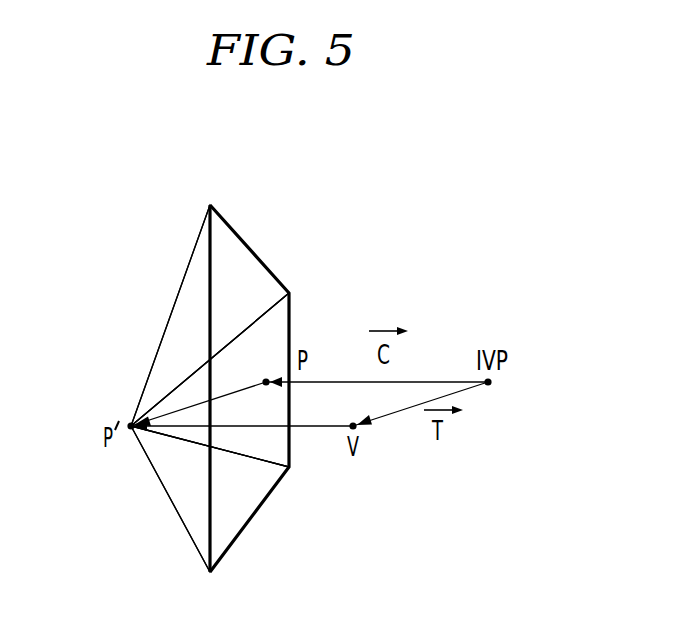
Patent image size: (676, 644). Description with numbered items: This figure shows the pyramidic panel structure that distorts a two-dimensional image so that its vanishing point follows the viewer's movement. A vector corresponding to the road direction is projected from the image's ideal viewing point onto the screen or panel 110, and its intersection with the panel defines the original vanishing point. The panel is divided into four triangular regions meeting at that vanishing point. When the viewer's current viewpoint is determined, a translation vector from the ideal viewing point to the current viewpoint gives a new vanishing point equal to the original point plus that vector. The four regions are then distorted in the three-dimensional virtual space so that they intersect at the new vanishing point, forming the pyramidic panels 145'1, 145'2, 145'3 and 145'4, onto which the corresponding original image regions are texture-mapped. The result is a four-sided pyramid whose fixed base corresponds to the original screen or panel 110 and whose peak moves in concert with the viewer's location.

The panel or screen 110 is at (365, 233).
The pyramidic panel 145'1 is at (240, 306).
The pyramidic panel 145'2 is at (275, 362).
The pyramidic panel 145'3 is at (221, 515).
The pyramidic panel 145'4 is at (151, 383).